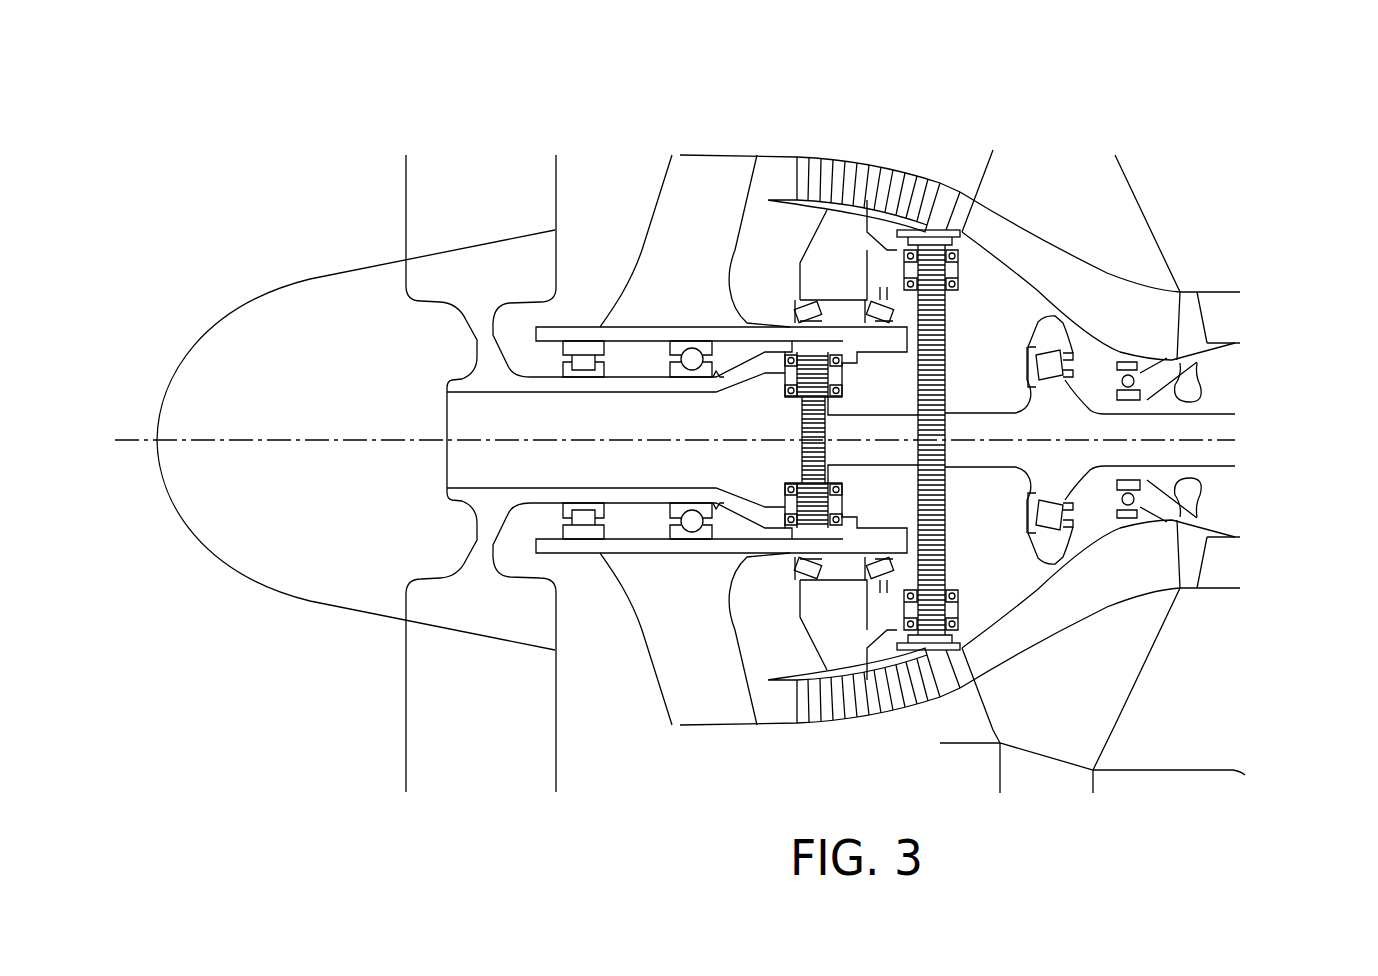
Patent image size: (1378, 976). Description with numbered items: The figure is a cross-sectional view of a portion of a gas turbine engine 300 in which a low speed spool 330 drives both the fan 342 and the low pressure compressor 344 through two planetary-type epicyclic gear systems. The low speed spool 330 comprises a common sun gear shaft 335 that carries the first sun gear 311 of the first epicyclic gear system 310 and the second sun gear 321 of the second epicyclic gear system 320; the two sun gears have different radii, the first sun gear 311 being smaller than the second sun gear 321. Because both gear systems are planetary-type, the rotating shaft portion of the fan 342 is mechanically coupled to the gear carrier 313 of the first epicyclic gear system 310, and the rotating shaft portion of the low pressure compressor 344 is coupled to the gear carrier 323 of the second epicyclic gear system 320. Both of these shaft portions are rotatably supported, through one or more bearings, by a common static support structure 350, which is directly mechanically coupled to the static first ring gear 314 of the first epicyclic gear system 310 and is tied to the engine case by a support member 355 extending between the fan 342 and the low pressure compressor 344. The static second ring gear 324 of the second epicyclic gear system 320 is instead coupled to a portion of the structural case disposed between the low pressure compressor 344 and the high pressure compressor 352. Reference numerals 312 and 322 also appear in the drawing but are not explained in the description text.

The gas turbine engine 300 is at (227, 250).
The first epicyclic gear system 310 is at (678, 427).
The first sun gear 311 is at (807, 460).
The gear 312 is at (818, 373).
The gear carrier 313 is at (785, 362).
The static first ring gear 314 is at (813, 352).
The second epicyclic gear system 320 is at (980, 320).
The second sun gear 321 is at (950, 432).
The gear shaft 322 is at (952, 337).
The gear carrier 323 is at (905, 262).
The static second ring gear 324 is at (932, 247).
The low speed spool 330 is at (990, 467).
The common sun gear shaft 335 is at (880, 453).
The fan 342 is at (435, 210).
The low pressure compressor 344 is at (770, 170).
The common static support structure 350 is at (570, 333).
The high pressure compressor 352 is at (1195, 252).
The support member 355 is at (667, 223).